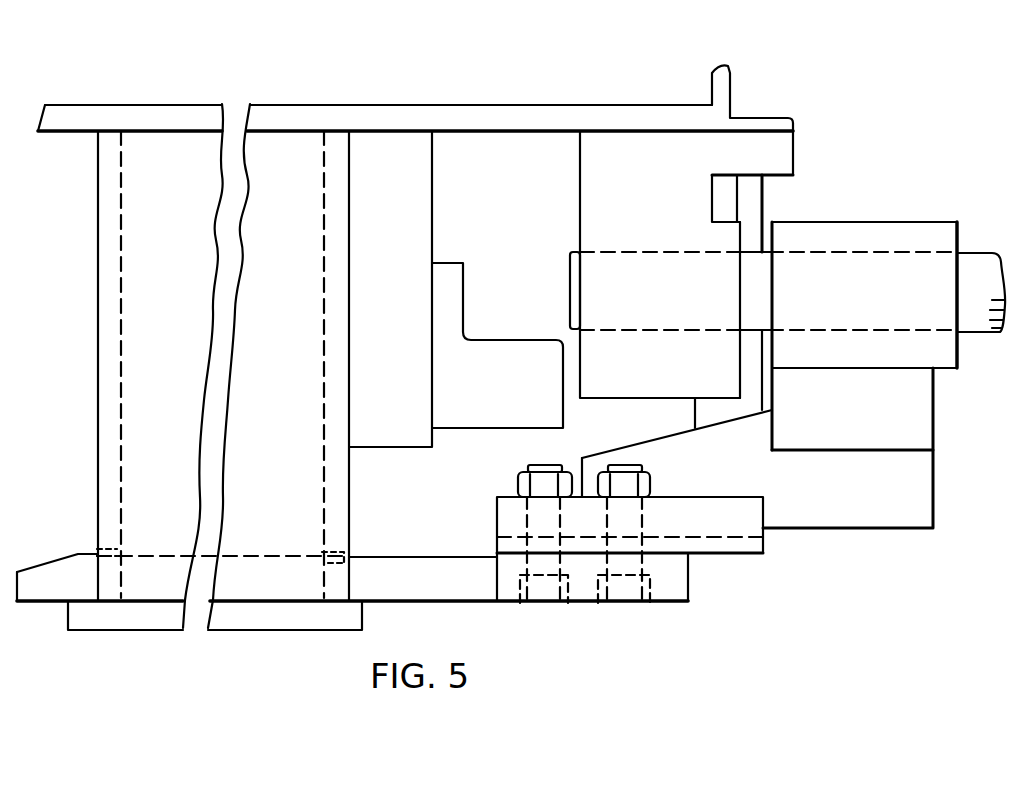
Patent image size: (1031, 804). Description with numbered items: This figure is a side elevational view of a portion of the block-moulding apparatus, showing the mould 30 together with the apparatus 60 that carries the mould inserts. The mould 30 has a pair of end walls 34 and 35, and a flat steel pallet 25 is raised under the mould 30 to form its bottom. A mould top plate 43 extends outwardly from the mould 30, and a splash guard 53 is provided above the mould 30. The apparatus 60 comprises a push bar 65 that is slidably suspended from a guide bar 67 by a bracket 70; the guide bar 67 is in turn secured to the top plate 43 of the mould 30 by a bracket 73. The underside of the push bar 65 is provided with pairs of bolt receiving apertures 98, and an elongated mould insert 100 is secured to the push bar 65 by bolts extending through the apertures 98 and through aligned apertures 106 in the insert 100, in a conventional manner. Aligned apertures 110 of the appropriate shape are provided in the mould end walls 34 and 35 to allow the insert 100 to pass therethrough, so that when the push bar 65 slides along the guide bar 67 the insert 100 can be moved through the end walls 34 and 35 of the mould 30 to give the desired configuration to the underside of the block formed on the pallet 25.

The pallet 25 is at (118, 618).
The mould 30 is at (125, 479).
The end wall 34 is at (115, 502).
The end wall 35 is at (338, 500).
The mould top plate 43 is at (626, 116).
The splash guard 53 is at (723, 88).
The apparatus 60 is at (702, 572).
The push bar 65 is at (757, 553).
The guide bar 67 is at (982, 267).
The bracket 70 is at (923, 473).
The bracket 73 is at (693, 208).
The bolt receiving aperture 98 is at (533, 520).
The mould insert 100 is at (253, 593).
The aperture 106 is at (518, 571).
The aperture 110 is at (118, 557).